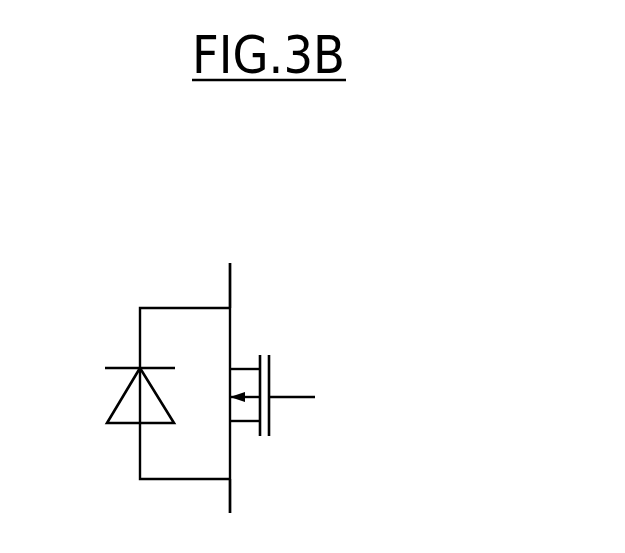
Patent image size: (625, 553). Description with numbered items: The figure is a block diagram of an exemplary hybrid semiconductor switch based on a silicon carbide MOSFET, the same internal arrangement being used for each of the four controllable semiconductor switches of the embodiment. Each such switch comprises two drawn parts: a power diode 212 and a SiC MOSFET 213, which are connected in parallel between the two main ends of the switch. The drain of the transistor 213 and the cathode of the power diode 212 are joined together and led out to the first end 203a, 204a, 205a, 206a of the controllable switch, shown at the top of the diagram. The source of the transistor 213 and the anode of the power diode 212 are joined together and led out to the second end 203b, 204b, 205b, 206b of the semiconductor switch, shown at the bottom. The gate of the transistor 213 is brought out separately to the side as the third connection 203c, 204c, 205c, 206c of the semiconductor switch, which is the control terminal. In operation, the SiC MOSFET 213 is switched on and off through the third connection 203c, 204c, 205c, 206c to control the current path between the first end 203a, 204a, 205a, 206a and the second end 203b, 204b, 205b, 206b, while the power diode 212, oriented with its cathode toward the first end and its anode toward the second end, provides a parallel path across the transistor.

The first end 203a is at (368, 279).
The first end 204a is at (368, 279).
The first end 205a is at (368, 279).
The first end 206a is at (230, 263).
The second end 203b is at (368, 503).
The second end 204b is at (368, 503).
The second end 205b is at (368, 503).
The second end 206b is at (230, 513).
The third connection 203c is at (427, 388).
The third connection 204c is at (427, 388).
The third connection 205c is at (427, 388).
The third connection 206c is at (315, 397).
The power diode 212 is at (118, 388).
The SiC MOSFET 213 is at (292, 435).